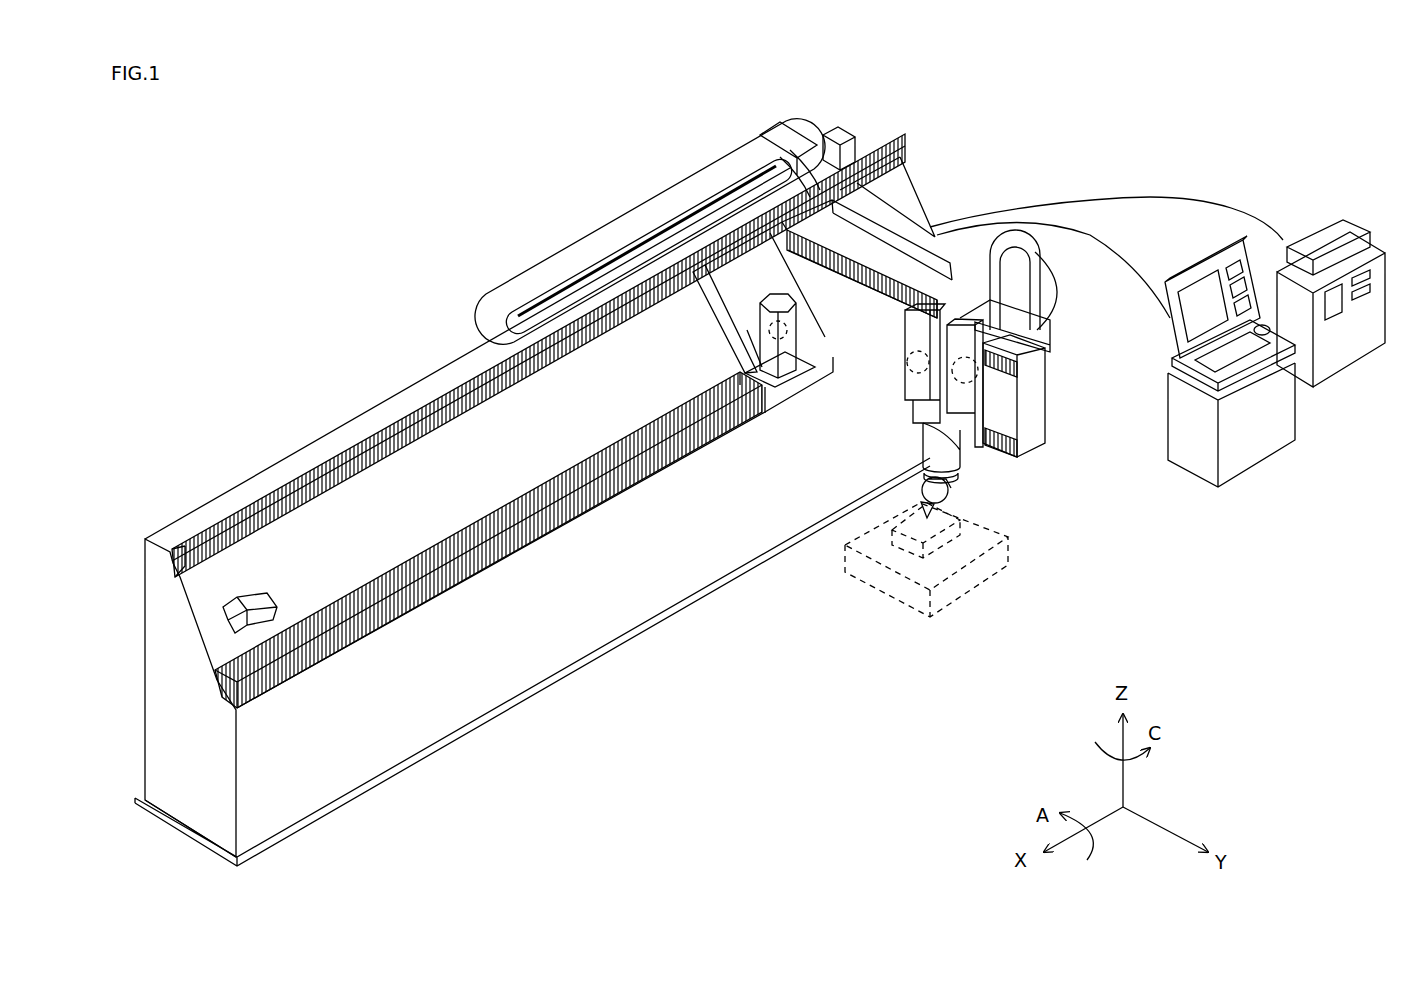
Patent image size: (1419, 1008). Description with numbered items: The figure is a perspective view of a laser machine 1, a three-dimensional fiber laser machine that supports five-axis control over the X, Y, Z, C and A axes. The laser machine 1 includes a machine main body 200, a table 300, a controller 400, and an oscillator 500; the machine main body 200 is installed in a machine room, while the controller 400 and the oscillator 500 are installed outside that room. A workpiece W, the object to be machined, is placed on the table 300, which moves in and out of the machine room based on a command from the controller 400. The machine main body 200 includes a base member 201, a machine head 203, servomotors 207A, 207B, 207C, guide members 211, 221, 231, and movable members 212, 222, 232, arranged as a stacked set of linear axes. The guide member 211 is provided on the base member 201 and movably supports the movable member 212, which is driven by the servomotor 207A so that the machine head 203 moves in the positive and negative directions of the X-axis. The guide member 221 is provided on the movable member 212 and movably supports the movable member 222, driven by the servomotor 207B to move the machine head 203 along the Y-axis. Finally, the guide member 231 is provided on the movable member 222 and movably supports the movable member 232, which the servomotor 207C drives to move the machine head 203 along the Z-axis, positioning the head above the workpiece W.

The laser machine 1 is at (1263, 100).
The machine main body 200 is at (953, 145).
The base member 201 is at (473, 690).
The guide member 211 is at (575, 523).
The movable member 212 is at (853, 310).
The guide member 221 is at (830, 320).
The movable member 222 is at (990, 378).
The servomotor 207A is at (775, 352).
The servomotor 207B is at (985, 373).
The servomotor 207C is at (990, 410).
The guide member 231 is at (955, 450).
The movable member 232 is at (945, 480).
The machine head 203 is at (935, 512).
The workpiece W is at (990, 527).
The table 300 is at (1003, 553).
The controller 400 is at (1260, 447).
The oscillator 500 is at (1353, 353).